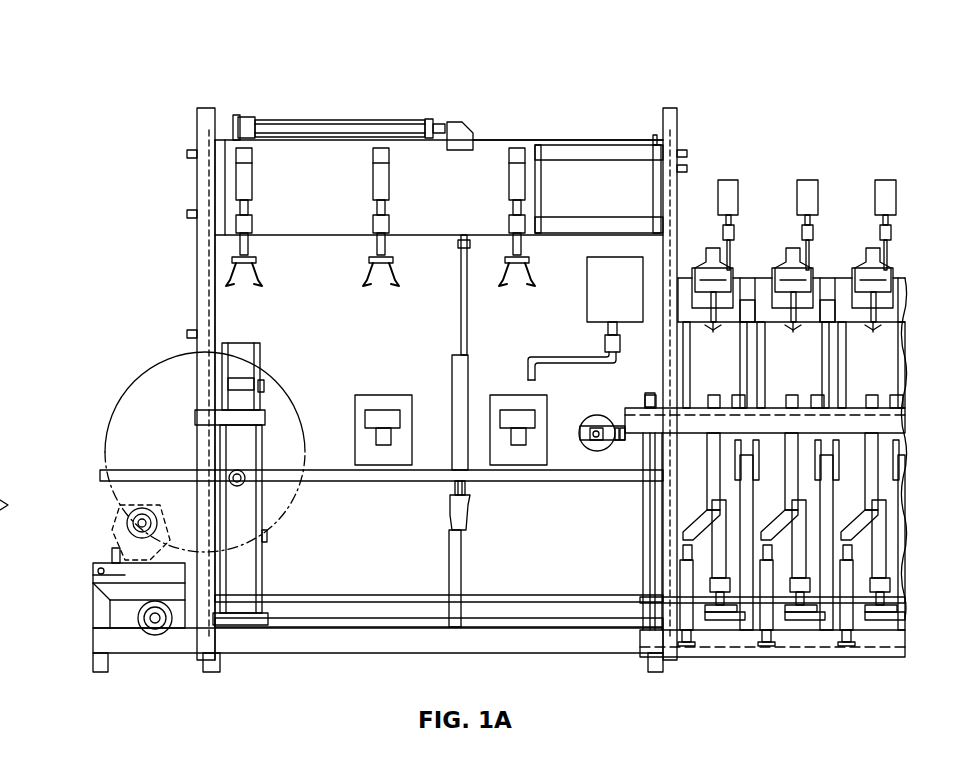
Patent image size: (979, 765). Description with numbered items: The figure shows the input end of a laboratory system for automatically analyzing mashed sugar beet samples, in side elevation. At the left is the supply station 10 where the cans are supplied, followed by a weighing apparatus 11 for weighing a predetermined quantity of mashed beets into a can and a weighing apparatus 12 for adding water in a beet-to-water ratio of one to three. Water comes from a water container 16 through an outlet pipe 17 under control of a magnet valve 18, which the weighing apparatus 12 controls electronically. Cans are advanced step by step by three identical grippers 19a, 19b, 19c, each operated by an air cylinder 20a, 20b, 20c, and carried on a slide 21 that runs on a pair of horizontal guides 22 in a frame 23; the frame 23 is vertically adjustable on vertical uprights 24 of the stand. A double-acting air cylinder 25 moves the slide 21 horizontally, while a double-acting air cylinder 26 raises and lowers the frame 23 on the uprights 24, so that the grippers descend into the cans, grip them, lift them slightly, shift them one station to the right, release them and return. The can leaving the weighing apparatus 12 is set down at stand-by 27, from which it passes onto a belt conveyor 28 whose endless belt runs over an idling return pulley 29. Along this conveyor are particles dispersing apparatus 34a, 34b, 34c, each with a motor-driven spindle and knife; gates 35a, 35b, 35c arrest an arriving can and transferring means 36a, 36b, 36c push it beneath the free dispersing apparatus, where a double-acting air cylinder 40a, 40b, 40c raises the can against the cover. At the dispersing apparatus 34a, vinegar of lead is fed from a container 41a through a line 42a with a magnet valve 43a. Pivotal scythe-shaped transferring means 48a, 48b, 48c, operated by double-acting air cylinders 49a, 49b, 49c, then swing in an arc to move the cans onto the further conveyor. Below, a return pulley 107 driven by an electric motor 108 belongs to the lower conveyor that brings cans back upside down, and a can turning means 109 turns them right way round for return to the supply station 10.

The supply station 10 is at (245, 340).
The weighing apparatus 11 is at (386, 395).
The weighing apparatus 12 is at (516, 395).
The water container 16 is at (587, 292).
The outlet pipe 17 is at (568, 363).
The magnet valve 18 is at (617, 350).
The gripper 19a is at (252, 272).
The gripper 19b is at (390, 272).
The gripper 19c is at (527, 277).
The air cylinder 20a is at (250, 182).
The air cylinder 20b is at (388, 182).
The air cylinder 20c is at (509, 182).
The slide 21 is at (497, 140).
The horizontal guide 22 is at (570, 148).
The frame 23 is at (640, 148).
The vertical upright 24 is at (207, 108).
The double-acting air cylinder 25 is at (370, 128).
The double-acting air cylinder 26 is at (452, 413).
The stand-by 27 is at (660, 388).
The belt conveyor 28 is at (605, 428).
The idling return pulley 29 is at (598, 452).
The particles dispersing apparatus 34a is at (706, 266).
The particles dispersing apparatus 34b is at (795, 260).
The particles dispersing apparatus 34c is at (875, 260).
The gate 35a is at (735, 392).
The gate 35b is at (815, 392).
The gate 35c is at (895, 392).
The transferring means 36a is at (713, 395).
The transferring means 36b is at (792, 395).
The transferring means 36c is at (872, 395).
The double-acting air cylinder 40a is at (715, 622).
The double-acting air cylinder 40b is at (795, 622).
The double-acting air cylinder 40c is at (888, 565).
The container 41a is at (740, 190).
The line 42a is at (733, 258).
The magnet valve 43a is at (735, 232).
The scythe-shaped transferring means 48a is at (712, 485).
The scythe-shaped transferring means 48b is at (790, 502).
The scythe-shaped transferring means 48c is at (870, 502).
The double-acting air cylinder 49a is at (685, 615).
The double-acting air cylinder 49b is at (765, 615).
The double-acting air cylinder 49c is at (850, 612).
The return pulley 107 is at (148, 642).
The electric motor 108 is at (122, 518).
The can turning means 109 is at (138, 385).